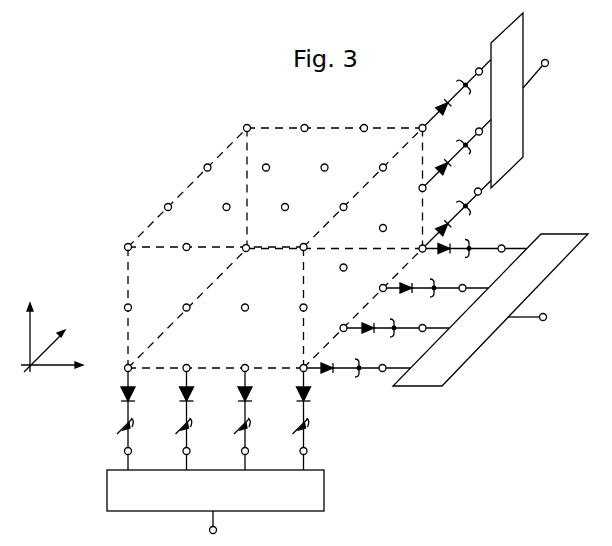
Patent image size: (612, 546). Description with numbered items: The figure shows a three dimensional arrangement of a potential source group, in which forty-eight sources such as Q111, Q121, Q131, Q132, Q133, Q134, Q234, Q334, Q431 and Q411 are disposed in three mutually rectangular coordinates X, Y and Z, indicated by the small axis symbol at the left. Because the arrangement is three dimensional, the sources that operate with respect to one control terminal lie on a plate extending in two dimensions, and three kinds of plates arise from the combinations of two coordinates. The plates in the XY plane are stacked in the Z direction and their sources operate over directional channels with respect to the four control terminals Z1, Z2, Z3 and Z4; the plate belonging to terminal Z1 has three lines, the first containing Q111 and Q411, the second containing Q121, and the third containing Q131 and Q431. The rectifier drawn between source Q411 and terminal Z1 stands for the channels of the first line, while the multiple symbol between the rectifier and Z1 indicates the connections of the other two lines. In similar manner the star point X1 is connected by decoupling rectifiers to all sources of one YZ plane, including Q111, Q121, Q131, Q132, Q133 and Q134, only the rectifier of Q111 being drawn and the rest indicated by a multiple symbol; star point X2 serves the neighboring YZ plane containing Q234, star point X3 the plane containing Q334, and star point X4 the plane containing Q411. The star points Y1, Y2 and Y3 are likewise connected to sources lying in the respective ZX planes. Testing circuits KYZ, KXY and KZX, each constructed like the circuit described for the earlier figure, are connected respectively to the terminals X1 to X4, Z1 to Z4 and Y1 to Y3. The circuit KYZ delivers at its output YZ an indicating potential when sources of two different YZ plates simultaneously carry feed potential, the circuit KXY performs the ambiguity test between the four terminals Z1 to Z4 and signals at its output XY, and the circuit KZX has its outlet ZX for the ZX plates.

The potential source Q111 is at (113, 368).
The potential source Q121 is at (112, 304).
The potential source Q131 is at (112, 241).
The potential source Q132 is at (151, 202).
The potential source Q133 is at (190, 163).
The potential source Q134 is at (230, 124).
The potential source Q234 is at (308, 121).
The potential source Q334 is at (368, 121).
The potential source Q431 is at (287, 241).
The potential source Q411 is at (288, 361).
The star point or control terminal X1 is at (121, 421).
The star point or control terminal X2 is at (179, 421).
The star point or control terminal X3 is at (237, 421).
The star point or control terminal X4 is at (296, 421).
The star point or control terminal Y1 is at (458, 205).
The star point or control terminal Y2 is at (458, 146).
The star point or control terminal Y3 is at (458, 87).
The control terminal Z1 is at (359, 377).
The control terminal Z2 is at (398, 335).
The control terminal Z3 is at (438, 295).
The control terminal Z4 is at (476, 256).
The testing circuit KYZ is at (215, 490).
The testing circuit KXY is at (490, 310).
The testing circuit KZX is at (507, 100).
The output YZ is at (224, 526).
The output XY is at (539, 320).
The outlet ZX is at (545, 72).
The coordinate X is at (55, 358).
The coordinate Y is at (30, 331).
The coordinate Z is at (50, 345).